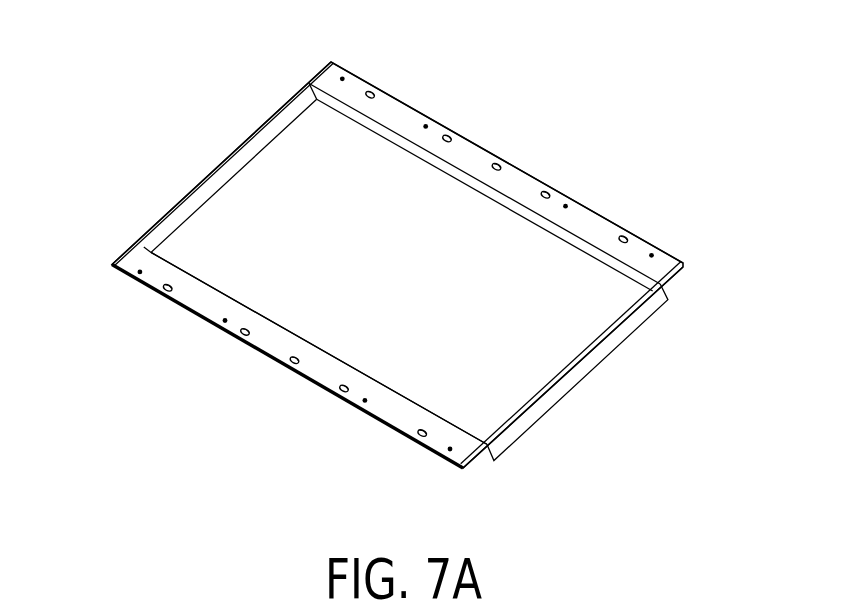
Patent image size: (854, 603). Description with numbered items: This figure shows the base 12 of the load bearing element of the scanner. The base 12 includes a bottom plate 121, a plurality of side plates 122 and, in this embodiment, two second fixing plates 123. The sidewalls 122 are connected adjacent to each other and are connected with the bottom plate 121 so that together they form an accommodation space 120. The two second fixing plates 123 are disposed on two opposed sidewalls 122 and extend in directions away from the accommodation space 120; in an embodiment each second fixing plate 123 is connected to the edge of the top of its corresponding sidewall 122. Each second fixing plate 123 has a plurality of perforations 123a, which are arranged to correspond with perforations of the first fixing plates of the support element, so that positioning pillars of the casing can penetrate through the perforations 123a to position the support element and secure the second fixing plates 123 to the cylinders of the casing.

The base 12 is at (735, 60).
The accommodation space 120 is at (298, 178).
The bottom plate 121 is at (318, 138).
The side plates 122 is at (158, 219).
The second fixing plate 123 is at (517, 178).
The perforations 123a is at (328, 392).